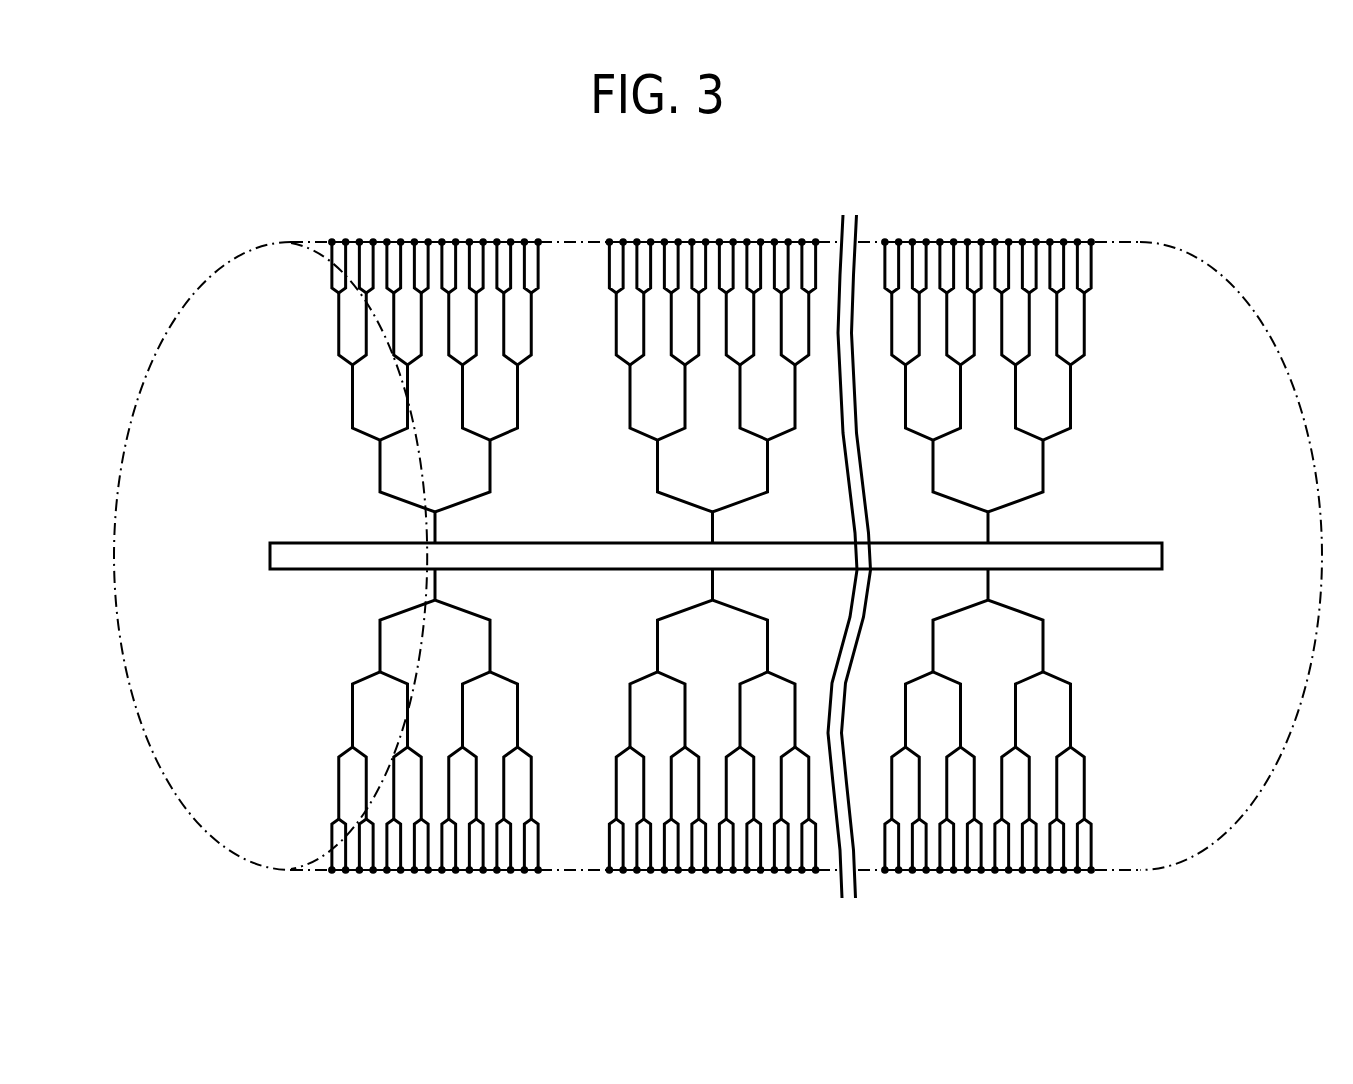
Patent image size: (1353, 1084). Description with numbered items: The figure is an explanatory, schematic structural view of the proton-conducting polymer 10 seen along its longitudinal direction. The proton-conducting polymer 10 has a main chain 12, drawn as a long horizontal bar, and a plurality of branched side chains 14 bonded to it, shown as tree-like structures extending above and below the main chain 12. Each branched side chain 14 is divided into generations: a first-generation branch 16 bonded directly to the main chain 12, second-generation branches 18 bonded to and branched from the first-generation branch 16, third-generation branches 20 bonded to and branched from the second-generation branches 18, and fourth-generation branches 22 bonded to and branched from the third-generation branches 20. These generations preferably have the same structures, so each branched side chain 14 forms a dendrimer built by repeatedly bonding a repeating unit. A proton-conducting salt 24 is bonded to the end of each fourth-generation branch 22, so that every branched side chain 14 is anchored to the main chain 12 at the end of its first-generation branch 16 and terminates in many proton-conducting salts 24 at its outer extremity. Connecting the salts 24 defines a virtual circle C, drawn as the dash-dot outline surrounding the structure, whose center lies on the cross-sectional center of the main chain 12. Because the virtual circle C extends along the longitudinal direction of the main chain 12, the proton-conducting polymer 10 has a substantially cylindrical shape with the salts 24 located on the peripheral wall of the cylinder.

The proton-conducting polymer 10 is at (1007, 113).
The main chain 12 is at (1163, 551).
The branched side chain 14 is at (1113, 250).
The first-generation branch 16 is at (349, 460).
The second-generation branch 18 is at (332, 365).
The third-generation branch 20 is at (314, 292).
The fourth-generation branch 22 is at (294, 255).
The proton-conducting salt 24 is at (414, 241).
The virtual circle C is at (165, 790).